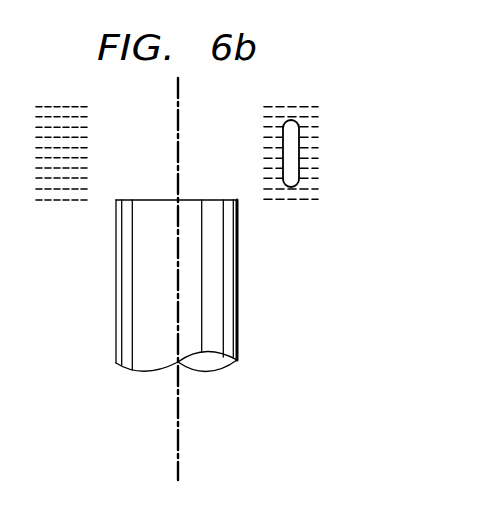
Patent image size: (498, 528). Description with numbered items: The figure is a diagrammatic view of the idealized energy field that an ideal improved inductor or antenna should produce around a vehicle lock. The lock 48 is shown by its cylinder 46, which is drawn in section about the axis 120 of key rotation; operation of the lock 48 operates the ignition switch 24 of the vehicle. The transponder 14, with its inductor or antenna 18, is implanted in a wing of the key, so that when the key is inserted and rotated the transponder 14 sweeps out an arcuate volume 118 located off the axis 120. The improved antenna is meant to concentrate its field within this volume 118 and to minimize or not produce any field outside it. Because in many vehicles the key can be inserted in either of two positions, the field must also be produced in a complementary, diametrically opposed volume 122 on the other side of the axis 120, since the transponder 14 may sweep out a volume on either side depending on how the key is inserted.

The transponder 14 is at (326, 185).
The inductor or antenna 18 is at (299, 190).
The ignition switch 24 is at (287, 286).
The cylinder 46 is at (117, 323).
The lock 48 is at (246, 342).
The arcuate volume 118 is at (303, 110).
The axis 120 is at (178, 427).
The complementary, diametrically opposed volume 122 is at (48, 108).